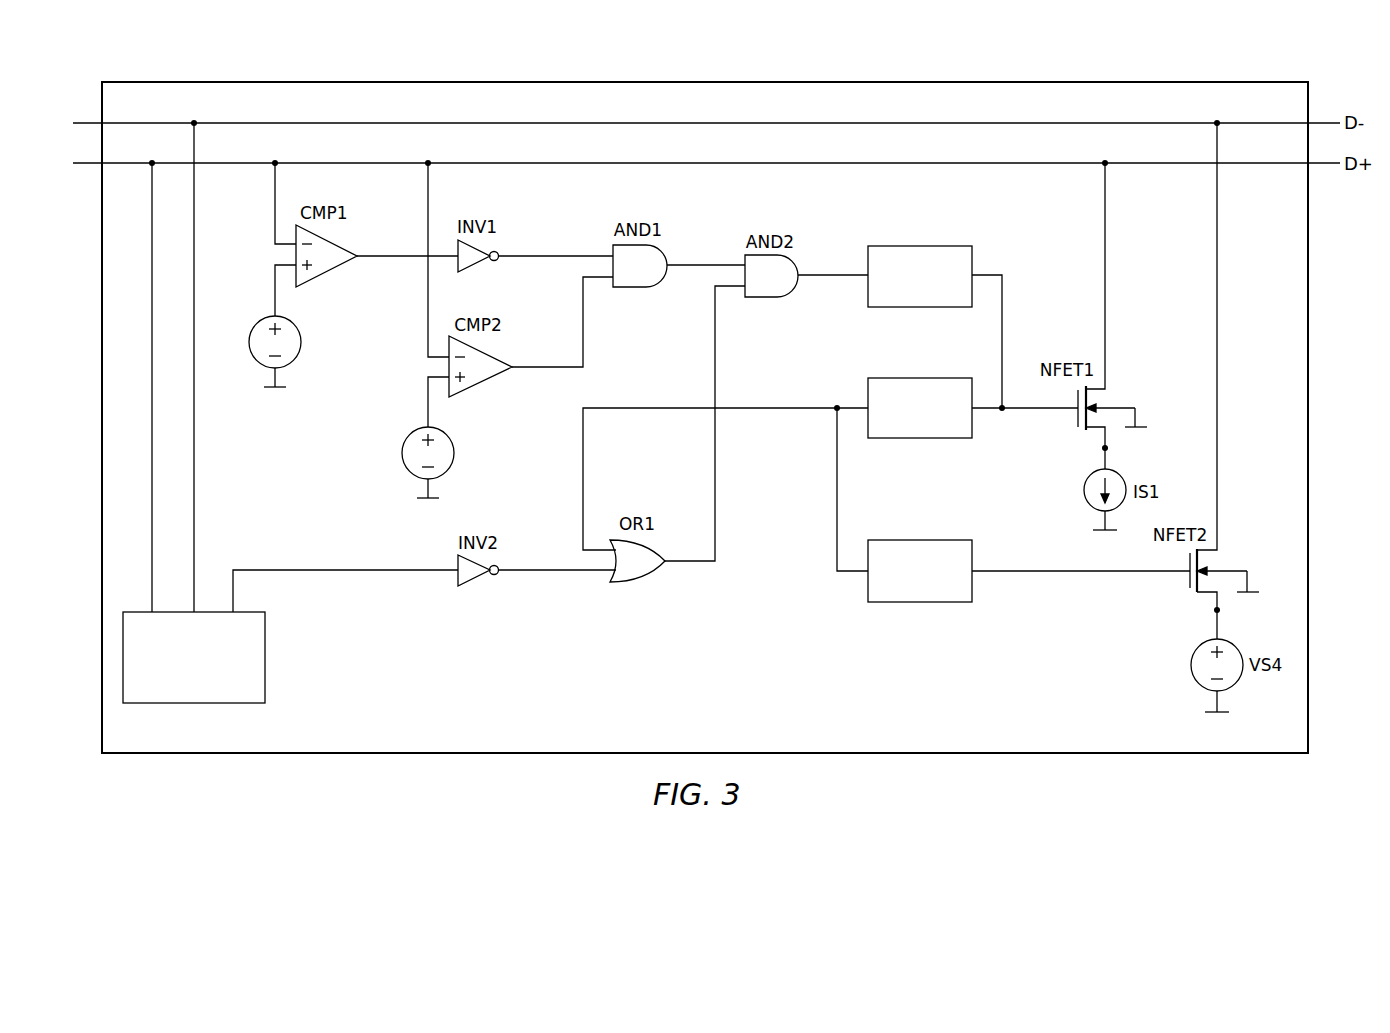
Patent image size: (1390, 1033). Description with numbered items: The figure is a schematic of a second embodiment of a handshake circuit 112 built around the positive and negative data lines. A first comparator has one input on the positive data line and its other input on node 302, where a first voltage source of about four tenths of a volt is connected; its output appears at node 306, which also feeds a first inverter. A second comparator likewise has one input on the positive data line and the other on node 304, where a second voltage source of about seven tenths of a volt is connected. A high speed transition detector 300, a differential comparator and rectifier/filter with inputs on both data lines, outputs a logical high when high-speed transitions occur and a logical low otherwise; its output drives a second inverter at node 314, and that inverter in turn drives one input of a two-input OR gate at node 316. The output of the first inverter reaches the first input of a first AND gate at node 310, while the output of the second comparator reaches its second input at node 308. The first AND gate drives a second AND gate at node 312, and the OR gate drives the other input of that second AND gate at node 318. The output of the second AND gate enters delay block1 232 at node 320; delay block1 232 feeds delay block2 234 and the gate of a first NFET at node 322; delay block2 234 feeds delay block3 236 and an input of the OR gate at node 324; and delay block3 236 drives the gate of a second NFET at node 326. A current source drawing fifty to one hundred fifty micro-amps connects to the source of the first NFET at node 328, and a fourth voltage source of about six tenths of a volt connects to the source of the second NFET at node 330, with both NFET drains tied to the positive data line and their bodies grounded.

The second handshake circuit 112 is at (487, 79).
The delay block1 232 is at (920, 245).
The delay block2 234 is at (920, 439).
The delay block3 236 is at (920, 603).
The high speed transition detector 300 is at (266, 655).
The node 302 is at (275, 297).
The node 304 is at (428, 408).
The node 306 is at (397, 258).
The node 308 is at (530, 369).
The node 310 is at (550, 253).
The node 312 is at (693, 263).
The node 314 is at (367, 572).
The node 316 is at (552, 572).
The node 318 is at (683, 565).
The node 320 is at (817, 279).
The node 322 is at (1003, 315).
The node 324 is at (652, 404).
The node 326 is at (1042, 573).
The node 328 is at (1098, 450).
The node 330 is at (1212, 612).